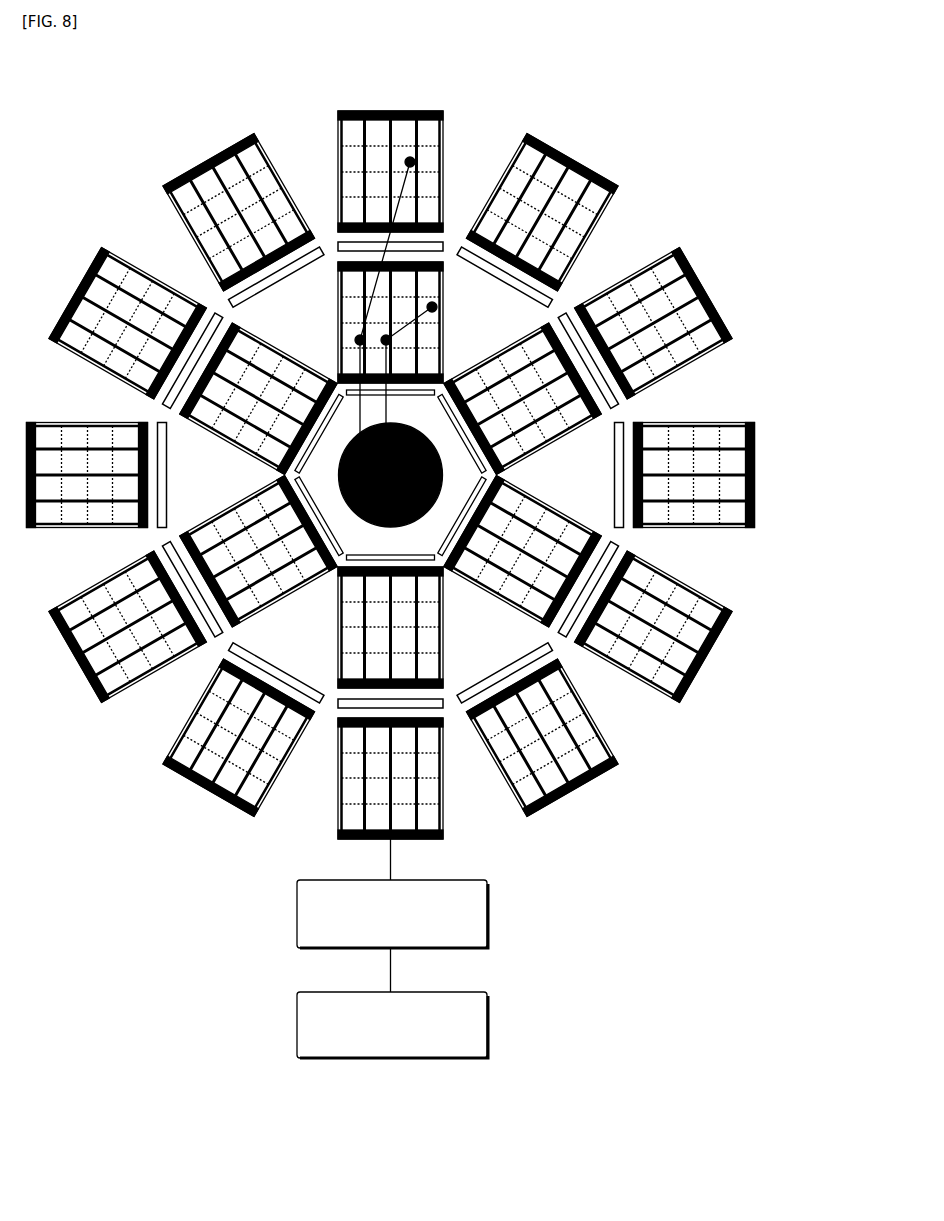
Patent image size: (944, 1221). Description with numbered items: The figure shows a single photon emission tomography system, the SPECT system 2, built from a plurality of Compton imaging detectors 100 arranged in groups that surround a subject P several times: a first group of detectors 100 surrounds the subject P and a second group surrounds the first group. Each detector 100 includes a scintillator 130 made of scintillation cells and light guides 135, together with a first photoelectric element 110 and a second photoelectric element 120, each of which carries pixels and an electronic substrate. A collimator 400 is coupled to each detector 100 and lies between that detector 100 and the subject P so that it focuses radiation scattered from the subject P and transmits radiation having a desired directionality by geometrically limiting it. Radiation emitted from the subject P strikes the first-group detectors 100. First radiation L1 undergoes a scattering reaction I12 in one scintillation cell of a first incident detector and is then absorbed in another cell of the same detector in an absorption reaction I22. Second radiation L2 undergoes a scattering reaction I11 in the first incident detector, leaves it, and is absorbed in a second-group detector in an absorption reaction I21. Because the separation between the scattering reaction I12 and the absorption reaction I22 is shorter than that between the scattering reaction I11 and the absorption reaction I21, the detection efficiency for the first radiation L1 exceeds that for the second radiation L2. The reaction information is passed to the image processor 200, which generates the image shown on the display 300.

The SPECT system 2 is at (106, 65).
The detector 100 is at (188, 153).
The first photoelectric element 110 is at (720, 475).
The second photoelectric element 120 is at (776, 475).
The scintillator 130 is at (724, 475).
The light guide 135 is at (720, 476).
The collimator 400 is at (618, 487).
The subject P is at (430, 470).
The first radiation L1 is at (392, 405).
The second radiation L2 is at (358, 402).
The scattering reaction I11 is at (356, 337).
The scattering reaction I12 is at (391, 340).
The absorption reaction I21 is at (416, 160).
The absorption reaction I22 is at (437, 306).
The image processor 200 is at (442, 880).
The display 300 is at (442, 992).